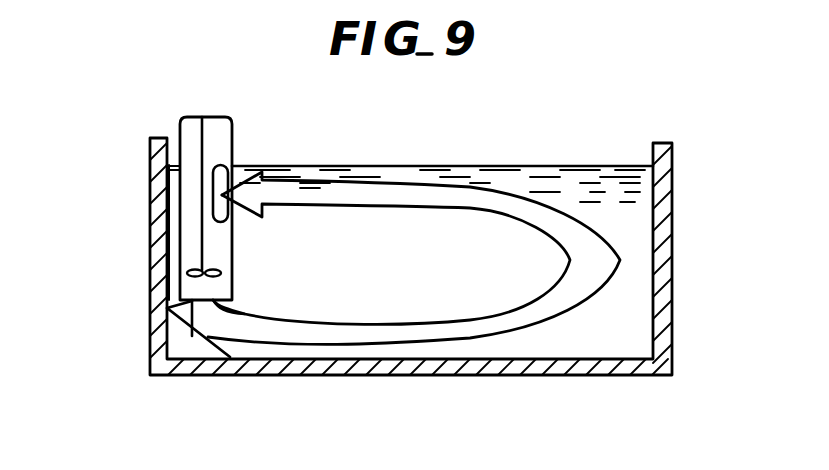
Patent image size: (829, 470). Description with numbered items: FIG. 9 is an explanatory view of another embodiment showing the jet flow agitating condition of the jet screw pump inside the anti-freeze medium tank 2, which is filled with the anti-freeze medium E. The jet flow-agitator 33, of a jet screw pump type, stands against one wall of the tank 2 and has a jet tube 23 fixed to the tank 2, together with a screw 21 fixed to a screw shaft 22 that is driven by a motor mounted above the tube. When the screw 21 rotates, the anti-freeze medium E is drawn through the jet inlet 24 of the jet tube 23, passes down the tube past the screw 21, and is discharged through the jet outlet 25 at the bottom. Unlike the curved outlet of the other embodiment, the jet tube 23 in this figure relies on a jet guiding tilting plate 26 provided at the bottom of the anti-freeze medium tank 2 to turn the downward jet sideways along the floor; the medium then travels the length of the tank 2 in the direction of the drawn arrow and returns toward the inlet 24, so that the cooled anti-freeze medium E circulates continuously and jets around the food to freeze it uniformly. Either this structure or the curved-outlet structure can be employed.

The anti-freeze medium tank 2 is at (672, 253).
The anti-freeze medium E is at (607, 166).
The jet flow-agitator 33 is at (228, 135).
The jet flow tube 23 is at (180, 222).
The inlet of jet flow 24 is at (213, 182).
The screw axis 22 is at (202, 243).
The screw 21 is at (192, 302).
The outlet of jet flow 25 is at (230, 330).
The jet flow guiding tilted plate 26 is at (175, 334).